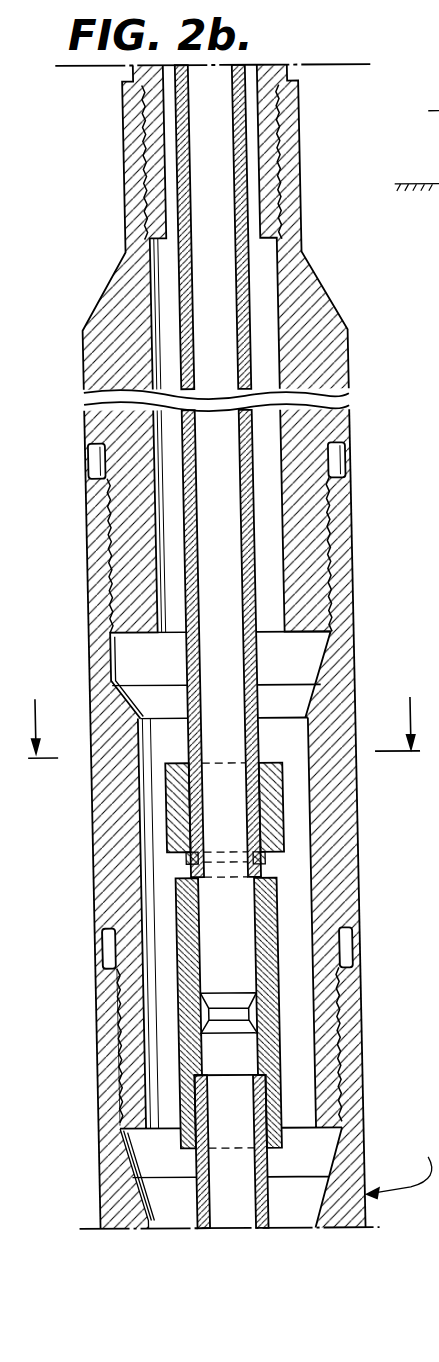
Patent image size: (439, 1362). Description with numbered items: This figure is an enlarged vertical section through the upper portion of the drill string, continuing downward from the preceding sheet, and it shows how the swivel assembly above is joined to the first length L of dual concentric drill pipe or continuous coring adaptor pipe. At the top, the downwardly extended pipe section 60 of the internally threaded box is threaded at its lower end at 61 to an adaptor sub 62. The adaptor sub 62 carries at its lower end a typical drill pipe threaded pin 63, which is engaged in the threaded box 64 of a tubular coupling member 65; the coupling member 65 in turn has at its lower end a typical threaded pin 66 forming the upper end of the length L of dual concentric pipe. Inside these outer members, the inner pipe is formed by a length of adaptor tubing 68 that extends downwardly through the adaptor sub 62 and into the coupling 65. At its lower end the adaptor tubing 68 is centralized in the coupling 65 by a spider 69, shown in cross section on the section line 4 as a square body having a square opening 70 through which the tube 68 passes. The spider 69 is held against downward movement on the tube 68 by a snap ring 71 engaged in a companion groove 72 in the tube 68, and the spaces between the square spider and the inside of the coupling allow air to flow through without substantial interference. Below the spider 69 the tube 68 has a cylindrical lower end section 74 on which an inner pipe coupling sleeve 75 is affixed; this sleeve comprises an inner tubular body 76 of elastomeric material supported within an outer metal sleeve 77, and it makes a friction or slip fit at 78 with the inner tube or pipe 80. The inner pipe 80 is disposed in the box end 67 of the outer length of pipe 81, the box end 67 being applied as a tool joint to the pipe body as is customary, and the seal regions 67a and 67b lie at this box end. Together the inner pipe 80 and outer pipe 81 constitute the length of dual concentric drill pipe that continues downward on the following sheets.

The pipe section 60 is at (272, 72).
The threaded connection 61 is at (155, 160).
The adaptor sub 62 is at (91, 366).
The threaded pin 63 is at (307, 530).
The threaded box 64 is at (337, 568).
The tubular coupling member 65 is at (321, 832).
The threaded pin 66 is at (309, 1037).
The box end 67 is at (86, 1060).
The seal ring 67a is at (265, 671).
The seal ring 67b is at (262, 442).
The adaptor tubing 68 is at (244, 347).
The spider 69 is at (157, 797).
The square opening 70 is at (246, 778).
The snap ring 71 is at (174, 858).
The groove 72 is at (248, 858).
The cylindrical lower end section 74 is at (260, 922).
The inner pipe coupling sleeve 75 is at (161, 1008).
The inner tubular body 76 is at (246, 978).
The outer metal sleeve 77 is at (259, 960).
The friction or slip fit 78 is at (239, 1098).
The inner tube or pipe 80 is at (242, 1165).
The outer length of pipe 81 is at (80, 1212).
The section line 4- 4 is at (223, 714).
The length of dual concentric drill pipe L is at (392, 652).